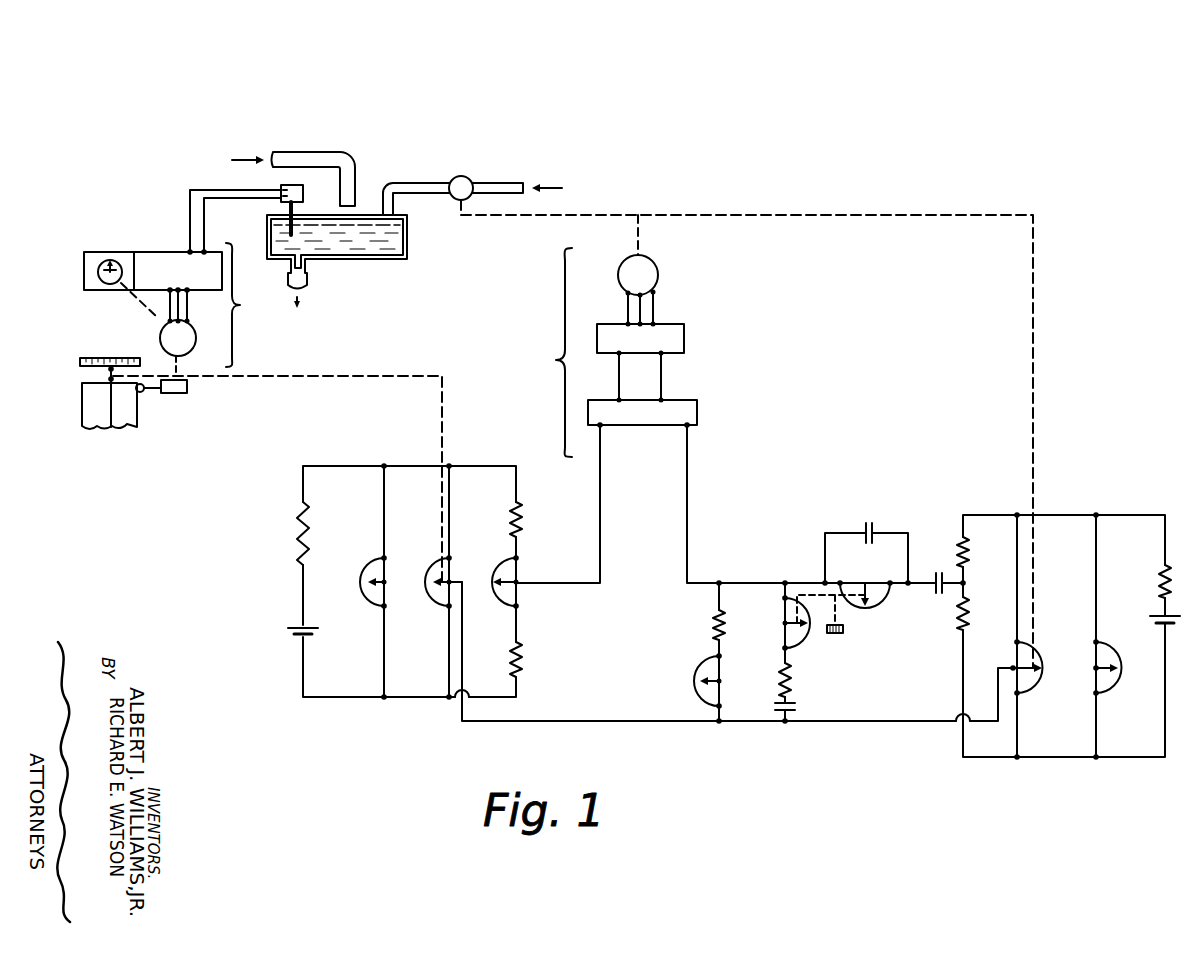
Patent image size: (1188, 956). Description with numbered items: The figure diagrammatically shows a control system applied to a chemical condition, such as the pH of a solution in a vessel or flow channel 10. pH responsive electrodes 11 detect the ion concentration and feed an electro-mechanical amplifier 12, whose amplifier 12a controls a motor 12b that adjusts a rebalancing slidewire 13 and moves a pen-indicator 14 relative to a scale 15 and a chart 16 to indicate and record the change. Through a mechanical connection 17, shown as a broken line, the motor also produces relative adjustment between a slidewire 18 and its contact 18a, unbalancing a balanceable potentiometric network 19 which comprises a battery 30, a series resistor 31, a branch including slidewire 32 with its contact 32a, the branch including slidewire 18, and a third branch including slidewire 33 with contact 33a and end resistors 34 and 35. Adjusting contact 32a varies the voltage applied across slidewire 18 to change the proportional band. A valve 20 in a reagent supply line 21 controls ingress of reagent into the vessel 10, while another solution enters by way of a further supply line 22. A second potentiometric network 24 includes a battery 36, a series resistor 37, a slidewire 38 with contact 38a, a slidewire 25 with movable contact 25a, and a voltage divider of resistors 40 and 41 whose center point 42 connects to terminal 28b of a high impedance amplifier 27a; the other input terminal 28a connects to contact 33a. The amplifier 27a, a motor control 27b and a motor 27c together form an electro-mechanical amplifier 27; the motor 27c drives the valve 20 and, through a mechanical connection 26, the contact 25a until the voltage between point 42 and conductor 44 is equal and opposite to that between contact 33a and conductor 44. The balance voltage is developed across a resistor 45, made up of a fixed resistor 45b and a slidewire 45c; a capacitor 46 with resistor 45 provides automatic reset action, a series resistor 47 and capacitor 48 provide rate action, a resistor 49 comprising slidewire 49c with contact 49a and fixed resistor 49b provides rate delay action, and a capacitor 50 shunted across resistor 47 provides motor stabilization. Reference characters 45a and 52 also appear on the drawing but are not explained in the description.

The vessel or flow channel 10 is at (377, 259).
The pH responsive electrodes 11 is at (297, 208).
The electro-mechanical amplifier 12 is at (182, 282).
The amplifier 12a is at (165, 251).
The motor 12b is at (167, 327).
The rebalancing slidewire 13 is at (104, 262).
The pen-indicator 14 is at (110, 377).
The scale 15 is at (118, 359).
The chart 16 is at (126, 421).
The mechanical connection 17 is at (336, 373).
The slidewire 18 is at (454, 581).
The contact 18a is at (445, 580).
The balanceable electrical network 19 is at (393, 740).
The valve 20 is at (458, 178).
The reagent supply line 21 is at (504, 183).
The further supply line 22 is at (350, 164).
The potentiometric network 24 is at (1068, 793).
The slidewire 25 is at (1045, 664).
The movable cooperating contact 25a is at (1026, 667).
The mechanical connection 26 is at (957, 217).
The electro-mechanical amplifier 27 is at (639, 336).
The high impedance amplifier 27a is at (698, 411).
The motor control 27b is at (685, 338).
The motor 27c is at (659, 277).
The input terminal 28a is at (602, 428).
The terminal 28b is at (689, 428).
The battery 30 is at (287, 630).
The series resistor 31 is at (298, 550).
The slidewire 32 is at (385, 581).
The contact 32a is at (378, 586).
The slidewire 33 is at (522, 595).
The contact 33a is at (503, 582).
The end resistor 34 is at (521, 517).
The end resistor 35 is at (523, 660).
The battery 36 is at (1156, 628).
The series resistor 37 is at (1160, 568).
The slidewire 38 is at (1126, 664).
The contact 38a is at (1109, 682).
The resistor 40 is at (968, 558).
The resistor 41 is at (961, 619).
The center point 42 is at (967, 584).
The conductor 44 is at (640, 723).
The resistor 45 is at (713, 652).
The base of transistor 45 45a is at (710, 683).
The fixed resistor 45b is at (715, 623).
The slidewire resistor 45c is at (702, 693).
The capacitor 46 is at (938, 573).
The series resistor 47 is at (878, 606).
The capacitor 48 is at (799, 706).
The resistor 49 is at (793, 623).
The contact 49a is at (797, 627).
The fixed resistor 49b is at (791, 686).
The slidewire 49c is at (788, 596).
The capacitor 50 is at (873, 526).
The heating element 52 is at (839, 635).